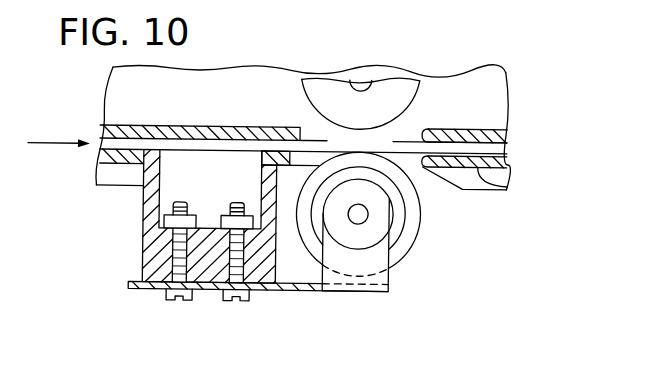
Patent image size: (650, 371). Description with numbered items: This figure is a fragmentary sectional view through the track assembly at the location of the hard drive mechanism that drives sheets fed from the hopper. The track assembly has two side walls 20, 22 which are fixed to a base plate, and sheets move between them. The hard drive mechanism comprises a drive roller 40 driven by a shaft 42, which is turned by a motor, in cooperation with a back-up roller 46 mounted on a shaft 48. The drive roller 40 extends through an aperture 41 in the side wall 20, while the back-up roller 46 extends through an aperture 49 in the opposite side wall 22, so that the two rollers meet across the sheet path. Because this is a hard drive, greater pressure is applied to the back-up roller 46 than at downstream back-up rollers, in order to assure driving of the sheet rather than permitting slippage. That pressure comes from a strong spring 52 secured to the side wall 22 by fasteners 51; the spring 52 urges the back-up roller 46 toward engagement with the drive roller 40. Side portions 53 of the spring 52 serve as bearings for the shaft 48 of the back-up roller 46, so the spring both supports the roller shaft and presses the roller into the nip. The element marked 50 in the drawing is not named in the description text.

The side wall 20 is at (180, 127).
The side wall 22 is at (509, 186).
The drive roller 40 is at (303, 99).
The aperture 41 is at (424, 124).
The shaft 42 is at (371, 79).
The back-up roller 46 is at (409, 245).
The shaft 48 is at (361, 200).
The aperture 49 is at (421, 160).
The hub 50 is at (397, 213).
The fasteners 51 is at (231, 300).
The spring 52 is at (309, 287).
The side portions 53 is at (388, 278).